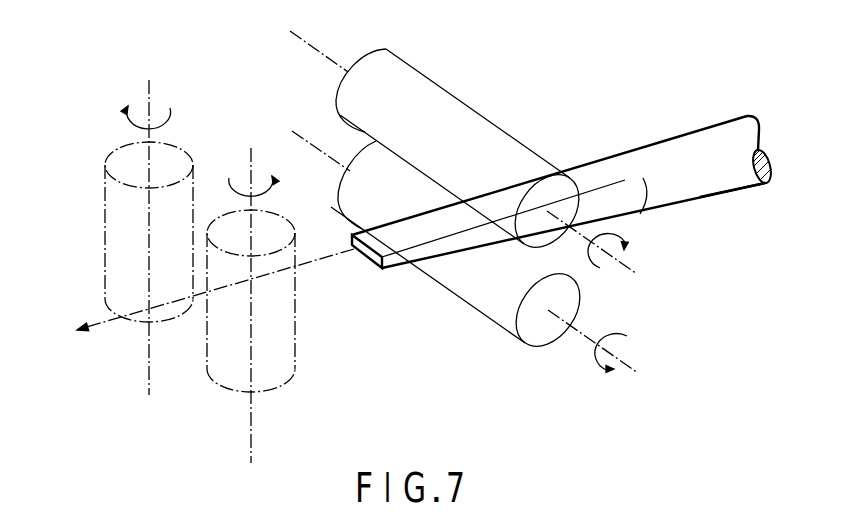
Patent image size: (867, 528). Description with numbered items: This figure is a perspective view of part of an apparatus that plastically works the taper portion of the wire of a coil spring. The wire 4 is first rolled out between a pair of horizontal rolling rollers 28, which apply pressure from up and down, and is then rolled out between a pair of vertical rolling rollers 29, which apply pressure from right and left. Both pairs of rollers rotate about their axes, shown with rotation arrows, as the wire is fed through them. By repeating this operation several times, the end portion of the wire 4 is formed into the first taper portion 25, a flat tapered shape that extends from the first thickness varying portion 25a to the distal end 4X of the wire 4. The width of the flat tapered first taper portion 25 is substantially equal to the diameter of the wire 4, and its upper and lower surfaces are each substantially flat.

The wire 4 is at (718, 187).
The distal end of the wire 4X is at (375, 260).
The first taper portion 25 is at (569, 197).
The first thickness varying portion 25a is at (629, 160).
The horizontal rolling rollers 28 is at (468, 90).
The vertical rolling rollers 29 is at (306, 348).